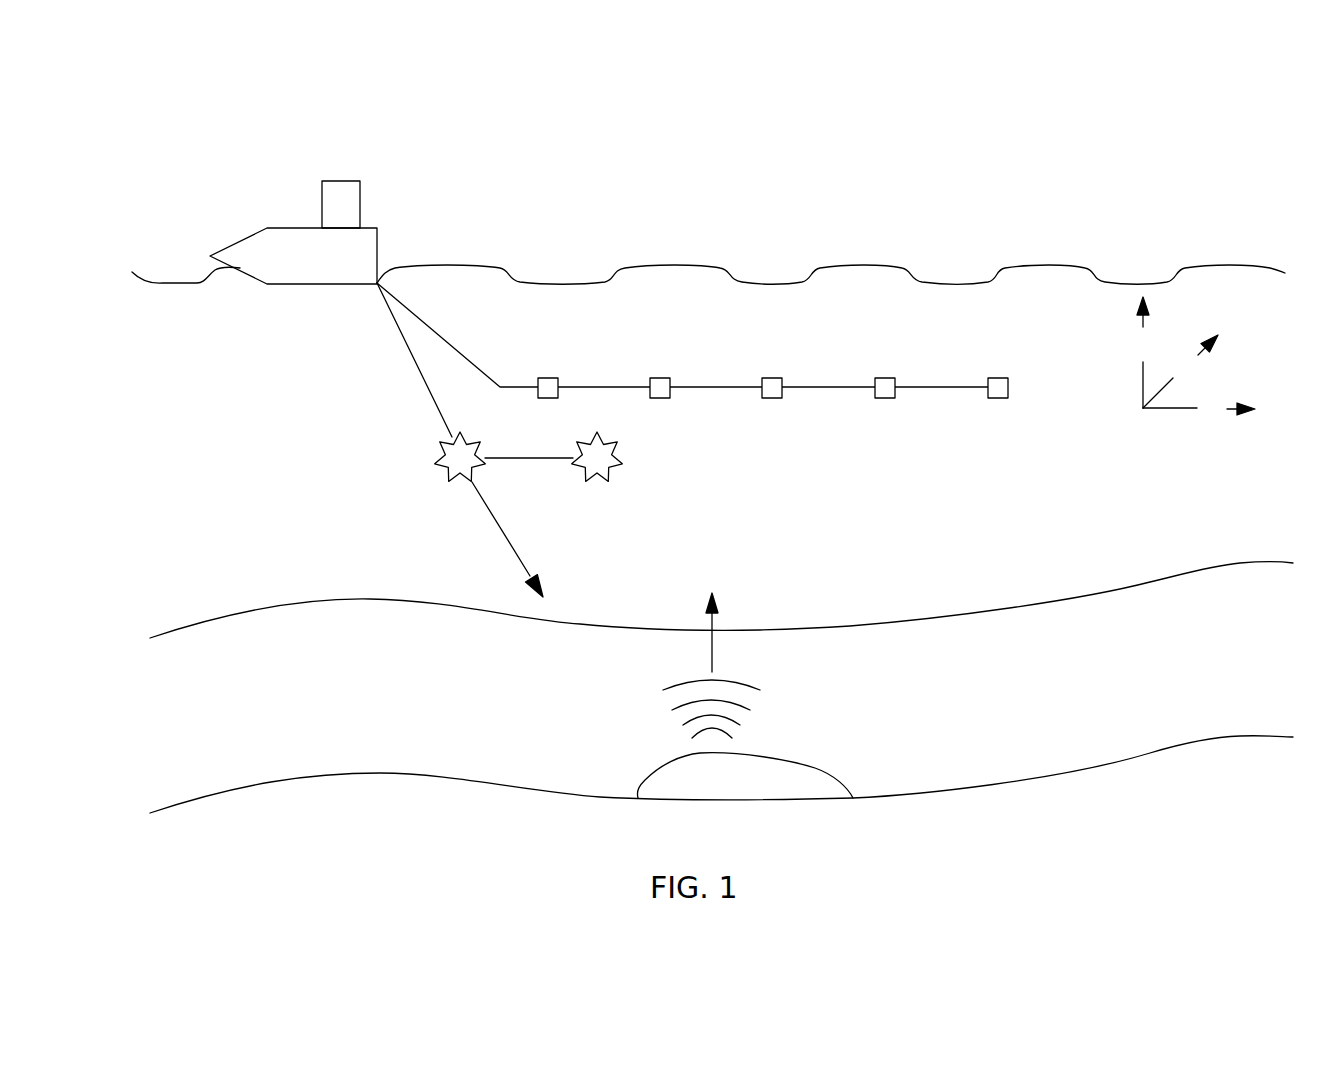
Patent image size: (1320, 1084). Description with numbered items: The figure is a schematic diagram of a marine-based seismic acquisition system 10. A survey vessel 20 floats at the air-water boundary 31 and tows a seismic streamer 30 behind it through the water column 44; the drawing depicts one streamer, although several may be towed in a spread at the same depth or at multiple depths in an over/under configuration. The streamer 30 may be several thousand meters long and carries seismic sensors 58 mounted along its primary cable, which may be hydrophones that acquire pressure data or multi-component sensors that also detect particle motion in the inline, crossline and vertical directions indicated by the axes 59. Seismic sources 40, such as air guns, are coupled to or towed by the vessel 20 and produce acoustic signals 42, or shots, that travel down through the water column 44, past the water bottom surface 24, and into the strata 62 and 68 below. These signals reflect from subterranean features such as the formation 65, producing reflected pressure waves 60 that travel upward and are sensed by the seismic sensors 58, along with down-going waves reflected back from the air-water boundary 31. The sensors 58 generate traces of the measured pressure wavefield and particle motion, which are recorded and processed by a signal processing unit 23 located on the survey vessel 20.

The marine-based seismic acquisition system 10 is at (190, 176).
The survey vessel 20 is at (377, 228).
The signal processing unit 23 is at (337, 181).
The water bottom surface 24 is at (912, 620).
The seismic streamer 30 is at (456, 347).
The air-water boundary 31 is at (1020, 267).
The seismic sources 40 is at (487, 460).
The acoustic signals 42 is at (517, 563).
The water column 44 is at (313, 439).
The seismic sensors 58 is at (550, 378).
The axes 59 is at (1140, 441).
The pressure waves 60 is at (648, 719).
The strata 62 is at (292, 691).
The formation 65 is at (728, 787).
The strata 68 is at (339, 827).